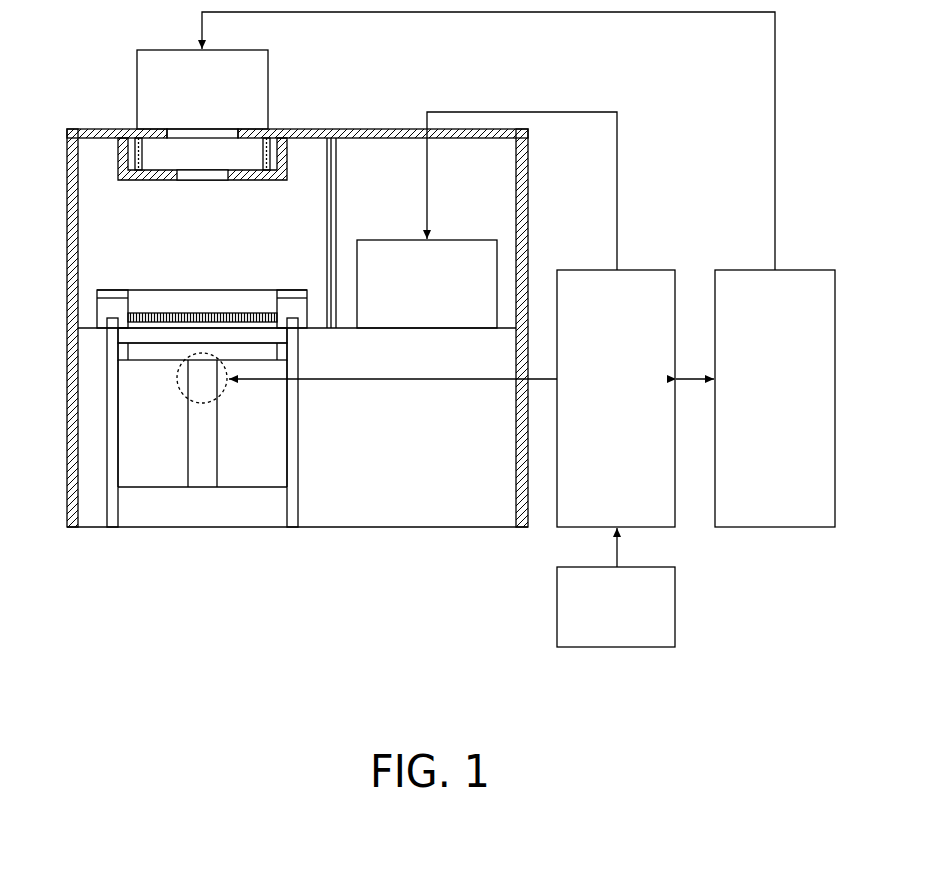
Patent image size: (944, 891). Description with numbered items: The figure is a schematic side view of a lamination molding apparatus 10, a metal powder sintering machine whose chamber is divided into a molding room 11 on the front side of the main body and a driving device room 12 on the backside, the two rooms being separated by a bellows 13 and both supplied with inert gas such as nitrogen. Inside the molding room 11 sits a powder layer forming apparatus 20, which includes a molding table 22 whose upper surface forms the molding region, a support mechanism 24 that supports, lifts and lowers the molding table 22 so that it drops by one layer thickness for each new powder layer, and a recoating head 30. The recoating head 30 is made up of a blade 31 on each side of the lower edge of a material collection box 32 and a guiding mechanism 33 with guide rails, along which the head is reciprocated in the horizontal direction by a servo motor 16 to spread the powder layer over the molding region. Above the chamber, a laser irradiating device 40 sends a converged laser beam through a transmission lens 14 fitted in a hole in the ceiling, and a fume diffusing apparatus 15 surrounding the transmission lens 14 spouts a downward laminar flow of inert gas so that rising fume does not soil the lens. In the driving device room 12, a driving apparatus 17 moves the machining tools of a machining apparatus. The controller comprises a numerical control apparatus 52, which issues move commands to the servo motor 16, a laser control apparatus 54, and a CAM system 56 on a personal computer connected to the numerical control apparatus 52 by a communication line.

The lamination molding apparatus 10 is at (365, 93).
The molding room 11 is at (303, 147).
The driving device room 12 is at (510, 183).
The bellows 13 is at (337, 170).
The transmission lens 14 is at (222, 133).
The fume diffusing apparatus 15 is at (148, 157).
The servo motor 16 is at (222, 390).
The driving apparatus 17 is at (453, 242).
The powder layer forming apparatus 20 is at (168, 371).
The molding table 22 is at (137, 335).
The support mechanism 24 is at (145, 355).
The recoating head 30 is at (140, 277).
The blade 31 is at (203, 325).
The material collection box 32 is at (257, 295).
The guiding mechanism 33 is at (100, 317).
The laser irradiating device 40 is at (152, 55).
The numerical control apparatus 52 is at (652, 275).
The laser control apparatus 54 is at (810, 275).
The computer aided manufacturing (CAM) system 56 is at (672, 607).